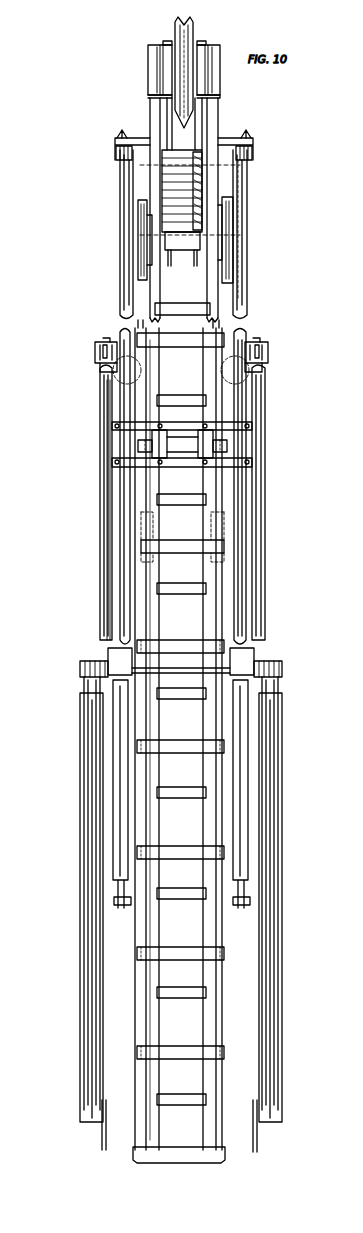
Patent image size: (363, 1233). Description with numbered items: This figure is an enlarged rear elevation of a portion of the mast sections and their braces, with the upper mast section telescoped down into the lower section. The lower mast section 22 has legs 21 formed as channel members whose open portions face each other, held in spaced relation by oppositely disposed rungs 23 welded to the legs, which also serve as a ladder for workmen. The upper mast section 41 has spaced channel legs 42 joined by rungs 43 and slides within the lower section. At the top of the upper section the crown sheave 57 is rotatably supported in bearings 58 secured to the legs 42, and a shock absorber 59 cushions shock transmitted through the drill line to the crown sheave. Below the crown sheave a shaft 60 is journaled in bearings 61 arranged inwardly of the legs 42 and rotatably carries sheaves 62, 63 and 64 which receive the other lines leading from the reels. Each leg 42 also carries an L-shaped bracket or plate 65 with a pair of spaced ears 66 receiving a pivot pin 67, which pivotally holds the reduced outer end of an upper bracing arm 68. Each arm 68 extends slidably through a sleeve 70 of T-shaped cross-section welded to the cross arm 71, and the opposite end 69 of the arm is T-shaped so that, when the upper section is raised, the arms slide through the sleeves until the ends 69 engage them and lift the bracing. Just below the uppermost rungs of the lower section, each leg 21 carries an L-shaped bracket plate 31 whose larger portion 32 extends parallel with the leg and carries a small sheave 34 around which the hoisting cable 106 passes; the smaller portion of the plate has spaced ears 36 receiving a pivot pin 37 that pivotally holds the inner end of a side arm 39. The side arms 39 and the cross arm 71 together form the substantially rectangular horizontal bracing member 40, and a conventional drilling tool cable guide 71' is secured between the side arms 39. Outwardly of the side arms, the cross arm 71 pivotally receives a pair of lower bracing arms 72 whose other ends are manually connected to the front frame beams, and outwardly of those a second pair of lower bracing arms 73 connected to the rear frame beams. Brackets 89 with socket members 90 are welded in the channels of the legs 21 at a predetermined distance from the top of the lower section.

The crown sheave 57 is at (176, 23).
The bearings 58 is at (150, 59).
The upper mast section 41 is at (236, 127).
The legs 42 is at (151, 290).
The bracket or plate 65 is at (146, 138).
The ears 66 is at (123, 137).
The pivot pin 67 is at (116, 153).
The upper bracing arms 68 is at (121, 181).
The shock absorber 59 is at (200, 183).
The sheave 63 is at (232, 192).
The sheave 62 is at (140, 210).
The sheave 64 is at (234, 214).
The shaft 60 is at (168, 240).
The bearings 61 is at (195, 259).
The legs 21 is at (137, 990).
The rungs 23 is at (214, 338).
The rungs 43 is at (190, 308).
The lower mast section 22 is at (129, 1144).
The bracket 89 is at (212, 527).
The socket member 90 is at (213, 560).
The drilling tool cable guide 71' is at (203, 439).
The cross arm 71 is at (181, 678).
The horizontal bracing member 40 is at (274, 457).
The side arms 39 is at (101, 471).
The bracket arm or plate 31 is at (89, 356).
The ears 36 is at (108, 339).
The pivot pin or bolt 37 is at (102, 348).
The portion 32 is at (112, 359).
The small sheave 34 is at (133, 378).
The sleeve 70 is at (110, 656).
The lower bracing arms 72 is at (95, 706).
The second pair of lower bracing arms 73 is at (88, 740).
The T-shape end 69 is at (108, 903).
The cable 106 is at (108, 403).